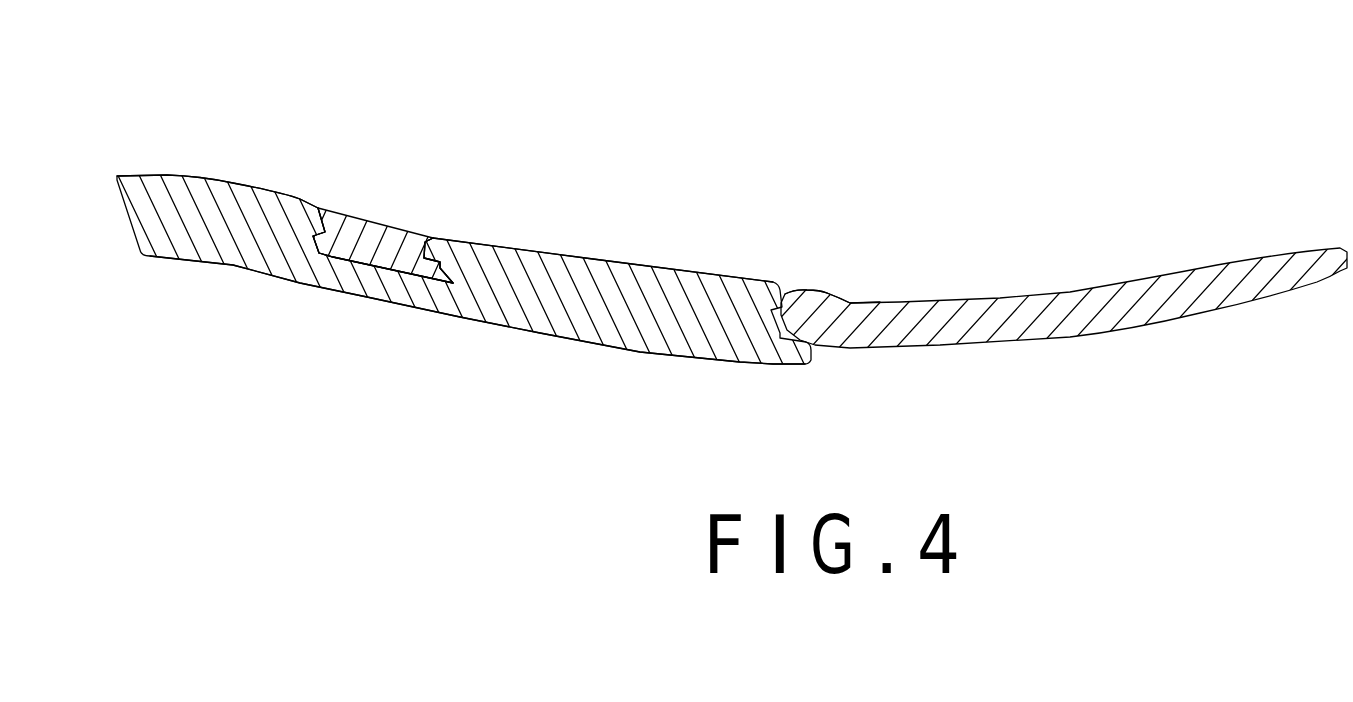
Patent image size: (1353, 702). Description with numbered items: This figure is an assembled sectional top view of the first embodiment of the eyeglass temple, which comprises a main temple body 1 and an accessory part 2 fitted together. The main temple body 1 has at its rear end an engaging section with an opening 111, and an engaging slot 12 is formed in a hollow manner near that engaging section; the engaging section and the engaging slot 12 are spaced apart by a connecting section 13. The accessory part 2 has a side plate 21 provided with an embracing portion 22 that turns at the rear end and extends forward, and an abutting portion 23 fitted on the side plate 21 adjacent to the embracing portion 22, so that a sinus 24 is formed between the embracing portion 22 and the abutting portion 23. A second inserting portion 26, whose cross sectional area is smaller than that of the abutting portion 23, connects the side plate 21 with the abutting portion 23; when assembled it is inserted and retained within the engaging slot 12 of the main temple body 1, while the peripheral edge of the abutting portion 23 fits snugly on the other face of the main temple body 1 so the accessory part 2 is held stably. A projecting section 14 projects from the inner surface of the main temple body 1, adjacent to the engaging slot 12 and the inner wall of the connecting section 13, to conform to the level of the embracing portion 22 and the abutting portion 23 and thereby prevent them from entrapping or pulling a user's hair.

The main temple body 1 is at (1080, 280).
The accessory part 2 is at (118, 240).
The engaging slot 12 is at (798, 292).
The connecting section 13 is at (372, 233).
The projecting section 14 is at (823, 292).
The side plate 21 is at (547, 352).
The embracing portion 22 is at (207, 170).
The abutting portion 23 is at (596, 250).
The sinus 24 is at (372, 267).
The second inserting portion 26 is at (458, 282).
The opening 111 is at (292, 213).